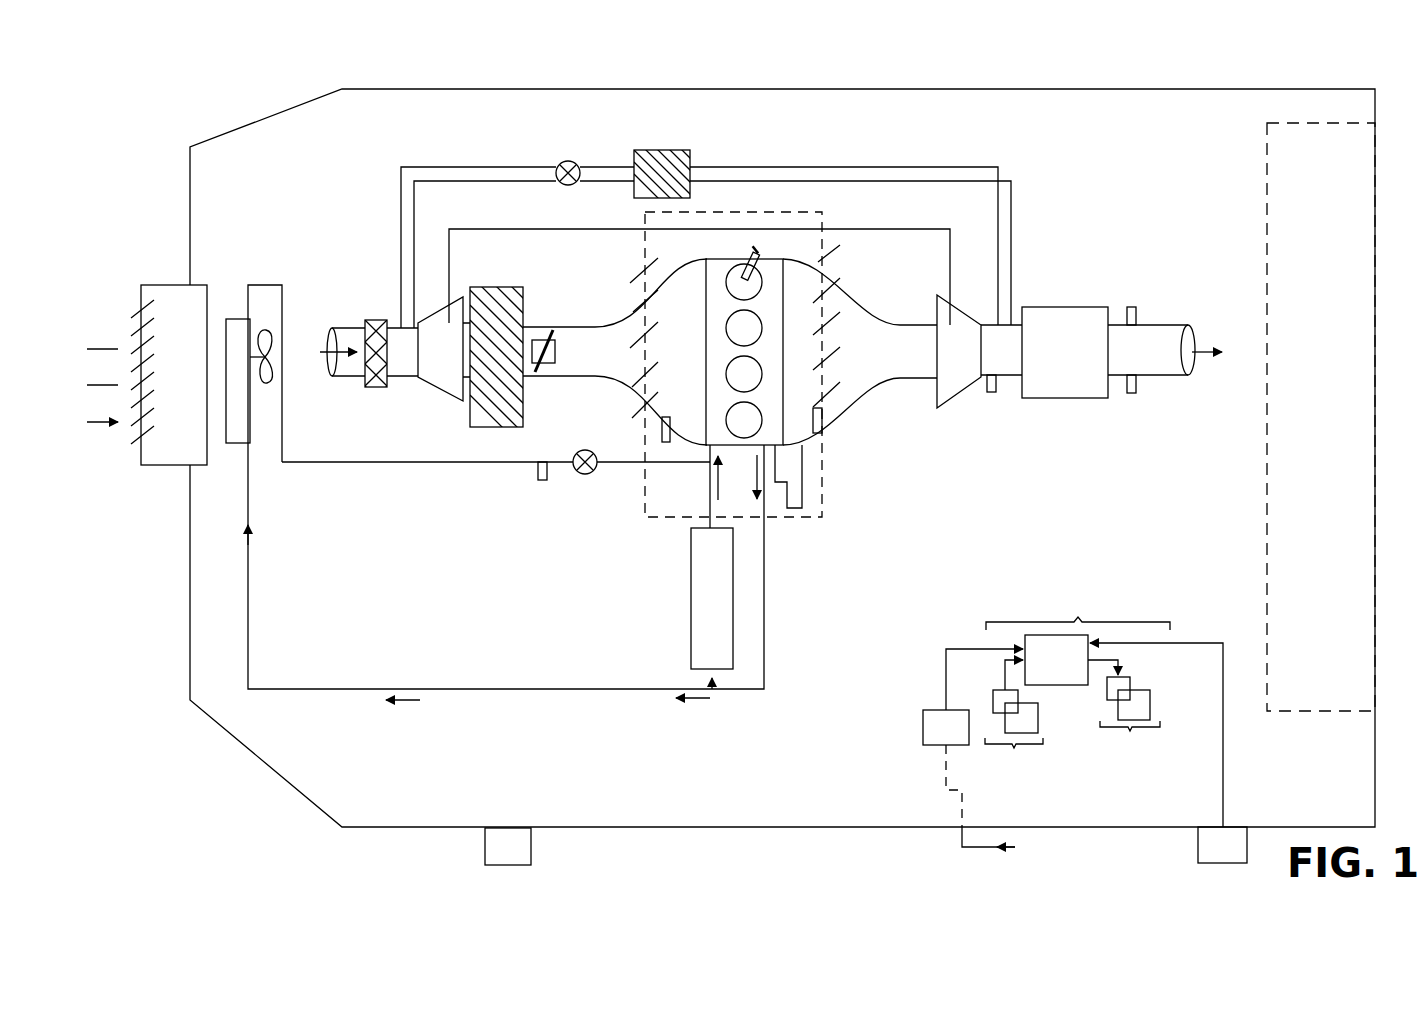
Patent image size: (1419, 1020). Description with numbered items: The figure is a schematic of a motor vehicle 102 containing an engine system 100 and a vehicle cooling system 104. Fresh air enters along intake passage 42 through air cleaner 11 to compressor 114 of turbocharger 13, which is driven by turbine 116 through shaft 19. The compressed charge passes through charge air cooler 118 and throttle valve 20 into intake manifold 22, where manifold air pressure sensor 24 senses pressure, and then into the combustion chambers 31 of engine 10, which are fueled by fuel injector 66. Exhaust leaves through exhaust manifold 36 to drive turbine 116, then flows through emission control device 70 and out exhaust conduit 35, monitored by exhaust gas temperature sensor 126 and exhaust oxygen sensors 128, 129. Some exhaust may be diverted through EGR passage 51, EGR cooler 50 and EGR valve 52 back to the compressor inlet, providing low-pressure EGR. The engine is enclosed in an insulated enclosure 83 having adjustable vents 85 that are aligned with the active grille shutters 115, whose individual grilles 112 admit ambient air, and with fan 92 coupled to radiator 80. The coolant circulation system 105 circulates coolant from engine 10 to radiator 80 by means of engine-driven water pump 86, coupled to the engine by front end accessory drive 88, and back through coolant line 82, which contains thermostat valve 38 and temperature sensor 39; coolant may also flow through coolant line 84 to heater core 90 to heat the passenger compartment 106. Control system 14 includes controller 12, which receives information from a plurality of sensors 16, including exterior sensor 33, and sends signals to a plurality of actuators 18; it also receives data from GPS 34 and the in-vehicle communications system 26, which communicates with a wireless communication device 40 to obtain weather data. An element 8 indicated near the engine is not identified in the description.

The vehicle 8 is at (1180, 238).
The engine 10 is at (784, 293).
The air cleaner 11 is at (374, 320).
The controller 12 is at (1070, 669).
The turbocharger 13 is at (498, 264).
The control system 14 is at (1078, 597).
The sensors 16 is at (1022, 731).
The actuators 18 is at (1144, 729).
The shaft 19 is at (570, 230).
The throttle valve 20 is at (556, 351).
The intake manifold 22 is at (624, 359).
The manifold air pressure sensor 24 is at (665, 442).
The in-vehicle communications system 26 is at (958, 737).
The combustion chambers 31 is at (752, 285).
The sensor 33 is at (520, 856).
The global positioning system 34 is at (1234, 855).
The exhaust conduit 35 is at (1168, 325).
The exhaust manifold 36 is at (878, 363).
The thermostat valve 38 is at (588, 475).
The temperature sensor 39 is at (542, 480).
The wireless communication device 40 is at (975, 848).
The intake passage 42 is at (362, 377).
The EGR cooler 50 is at (667, 150).
The EGR passage 51 is at (777, 167).
The EGR valve 52 is at (572, 161).
The fuel injector 66 is at (758, 252).
The emission control device 70 is at (1050, 307).
The radiator 80 is at (250, 389).
The coolant line 82 is at (465, 465).
The insulated enclosure 83 is at (673, 518).
The coolant line 84 is at (709, 500).
The adjustable vents 85 is at (640, 310).
The engine-driven water pump 86 is at (800, 498).
The front end accessory drive 88 is at (788, 453).
The heater core 90 is at (723, 607).
The fan 92 is at (262, 383).
The engine system 100 is at (1122, 177).
The motor vehicle 102 is at (718, 89).
The vehicle cooling system 104 is at (135, 240).
The coolant circulation system 105 is at (826, 656).
The passenger compartment 106 is at (1328, 413).
The grilles 112 is at (140, 452).
The compressor 114 is at (459, 361).
The active grille shutters 115 is at (200, 379).
The turbine 116 is at (978, 361).
The charge air cooler 118 is at (523, 290).
The exhaust gas temperature sensor 126 is at (990, 392).
The exhaust oxygen sensor 128 is at (1131, 393).
The exhaust oxygen sensor 129 is at (1131, 307).